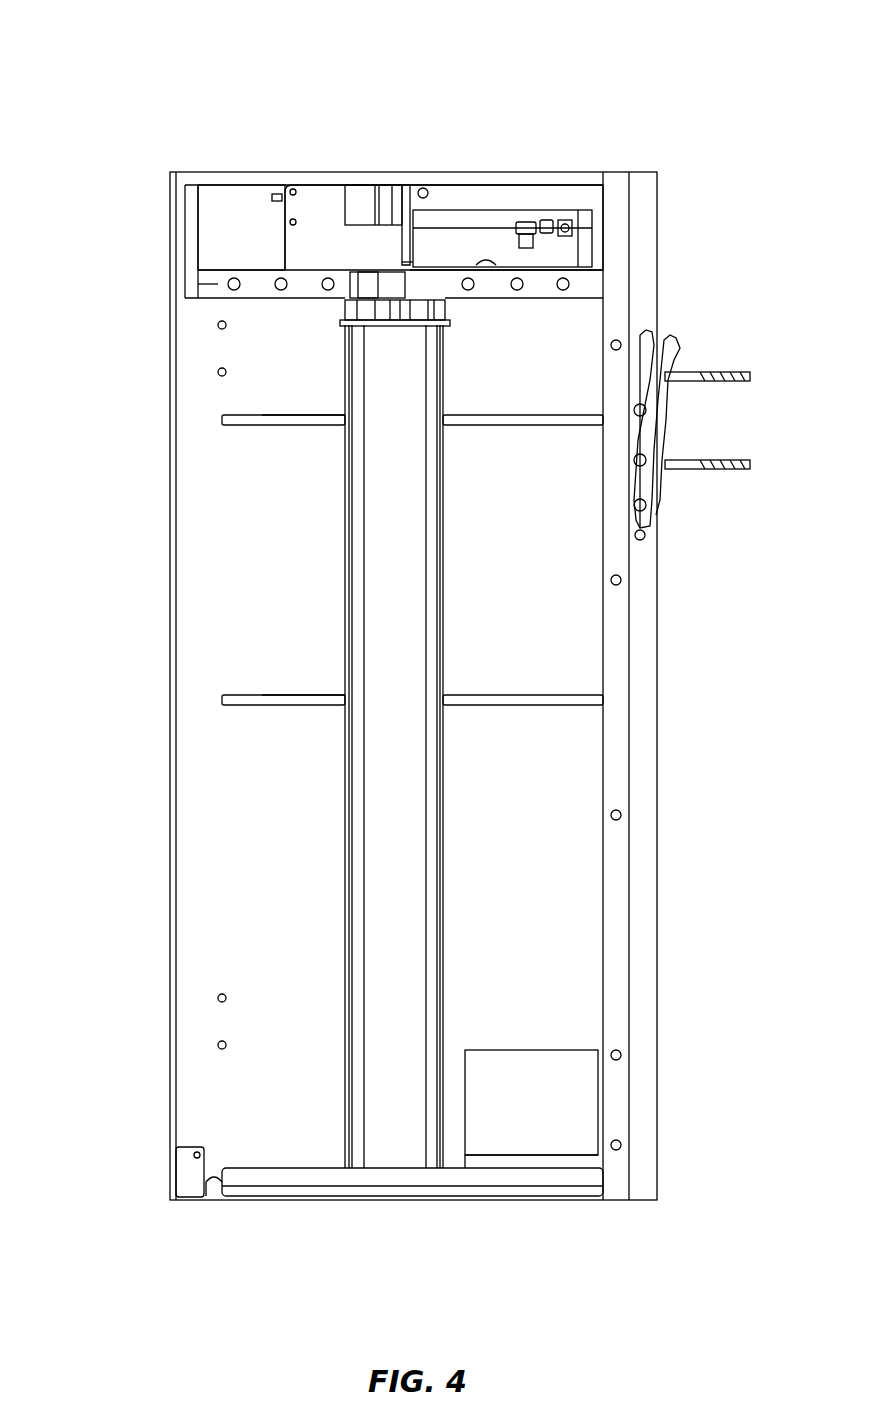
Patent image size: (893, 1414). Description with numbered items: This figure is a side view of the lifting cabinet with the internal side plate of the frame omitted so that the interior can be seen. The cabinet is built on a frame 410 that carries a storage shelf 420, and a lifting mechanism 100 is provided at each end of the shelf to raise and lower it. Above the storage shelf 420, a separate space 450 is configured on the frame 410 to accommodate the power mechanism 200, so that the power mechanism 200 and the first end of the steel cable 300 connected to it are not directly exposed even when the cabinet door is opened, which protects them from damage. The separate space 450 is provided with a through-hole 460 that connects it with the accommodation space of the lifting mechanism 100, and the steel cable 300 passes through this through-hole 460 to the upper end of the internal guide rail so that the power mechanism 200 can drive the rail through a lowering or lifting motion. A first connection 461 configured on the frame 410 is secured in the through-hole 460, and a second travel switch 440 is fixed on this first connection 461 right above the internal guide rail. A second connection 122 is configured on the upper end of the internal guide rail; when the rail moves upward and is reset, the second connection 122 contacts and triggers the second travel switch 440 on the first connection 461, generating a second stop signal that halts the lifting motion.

The lifting mechanism 100 is at (360, 690).
The second connection 122 is at (413, 310).
The power mechanism 200 is at (455, 238).
The steel cable 300 is at (385, 265).
The frame 410 is at (190, 470).
The storage shelf 420 is at (255, 710).
The second travel switch 440 is at (355, 292).
The separate space 450 is at (232, 205).
The through-hole 460 is at (413, 262).
The first connection 461 is at (385, 290).